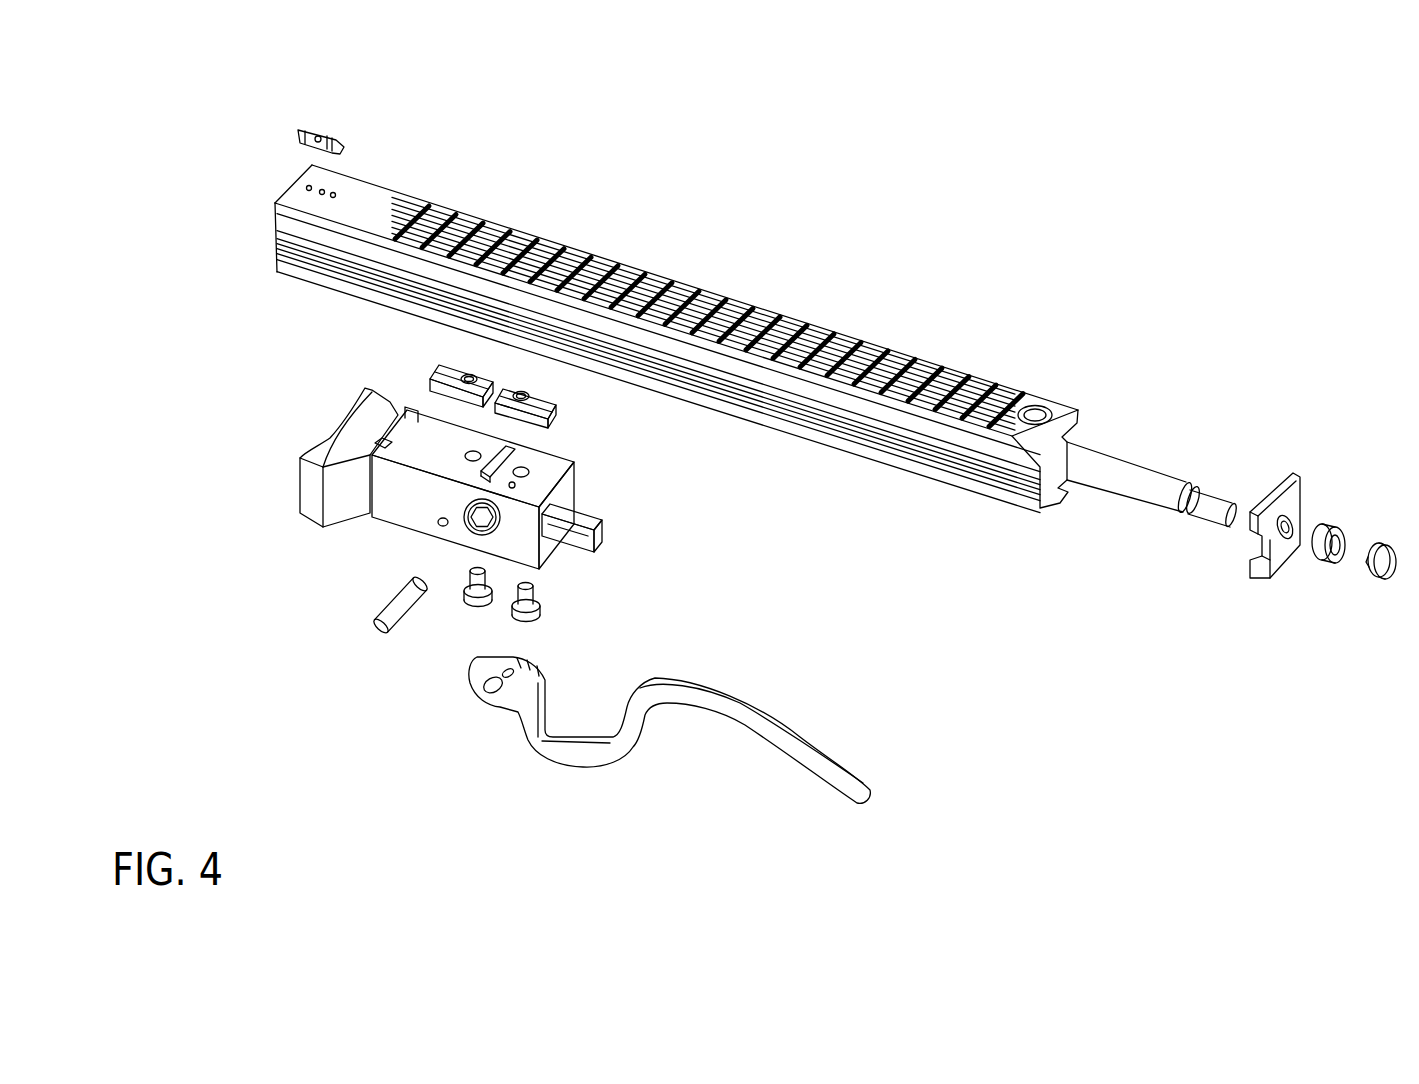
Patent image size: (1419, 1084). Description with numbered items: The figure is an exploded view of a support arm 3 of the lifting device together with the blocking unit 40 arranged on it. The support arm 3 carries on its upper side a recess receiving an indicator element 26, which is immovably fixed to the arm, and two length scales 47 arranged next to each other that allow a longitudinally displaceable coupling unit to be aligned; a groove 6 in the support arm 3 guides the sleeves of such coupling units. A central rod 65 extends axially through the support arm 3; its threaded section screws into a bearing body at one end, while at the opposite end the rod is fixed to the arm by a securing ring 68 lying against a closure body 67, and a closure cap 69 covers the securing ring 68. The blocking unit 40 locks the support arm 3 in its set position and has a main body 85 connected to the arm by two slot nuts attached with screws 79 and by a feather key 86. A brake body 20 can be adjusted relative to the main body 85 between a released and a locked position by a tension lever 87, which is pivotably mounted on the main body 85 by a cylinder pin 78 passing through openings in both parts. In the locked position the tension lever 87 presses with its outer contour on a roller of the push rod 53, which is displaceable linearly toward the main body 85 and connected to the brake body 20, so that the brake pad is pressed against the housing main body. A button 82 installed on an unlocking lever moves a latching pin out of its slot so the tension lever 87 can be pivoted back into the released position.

The support arm 3 is at (333, 219).
The indicator element 26 is at (312, 133).
The length scales 47 is at (684, 303).
The groove 6 is at (830, 418).
The central rod 65 is at (1097, 463).
The closure body 67 is at (1292, 493).
The securing ring 68 is at (1327, 523).
The closure cap 69 is at (1380, 550).
The main body 85 is at (397, 503).
The feather key 86 is at (507, 450).
The button 82 is at (578, 536).
The brake body 20 is at (333, 503).
The push rod 53 is at (543, 397).
The screws 79 is at (533, 597).
The cylinder pin 78 is at (398, 615).
The tension lever 87 is at (752, 722).
The blocking unit 40 is at (256, 739).